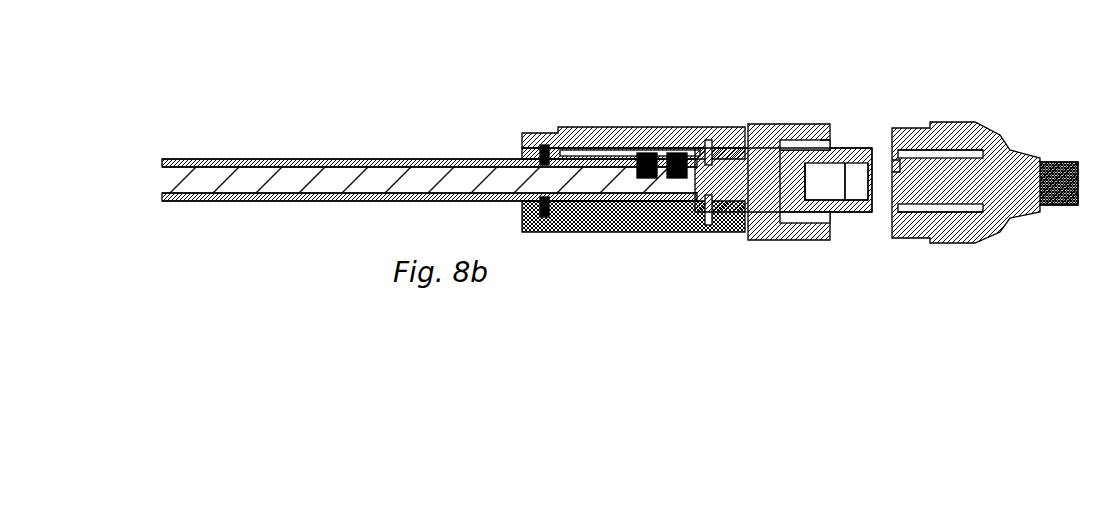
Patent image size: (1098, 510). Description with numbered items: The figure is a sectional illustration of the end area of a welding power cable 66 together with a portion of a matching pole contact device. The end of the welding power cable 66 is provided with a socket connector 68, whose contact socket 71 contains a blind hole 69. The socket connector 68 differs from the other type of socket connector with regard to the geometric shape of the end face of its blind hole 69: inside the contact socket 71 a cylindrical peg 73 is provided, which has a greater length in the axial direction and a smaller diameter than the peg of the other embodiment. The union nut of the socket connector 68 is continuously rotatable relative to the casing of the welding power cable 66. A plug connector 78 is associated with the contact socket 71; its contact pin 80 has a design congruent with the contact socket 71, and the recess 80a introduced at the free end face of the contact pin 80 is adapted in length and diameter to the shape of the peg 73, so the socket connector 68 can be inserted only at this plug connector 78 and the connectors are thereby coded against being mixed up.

The welding power cable 66 is at (476, 138).
The socket connector 68 is at (740, 98).
The blind hole 69 is at (860, 190).
The contact socket 71 is at (838, 148).
The cylindrical peg 73 is at (812, 185).
The plug connector 78 is at (950, 106).
The contact pin 80 is at (952, 185).
The recess 80a is at (890, 172).